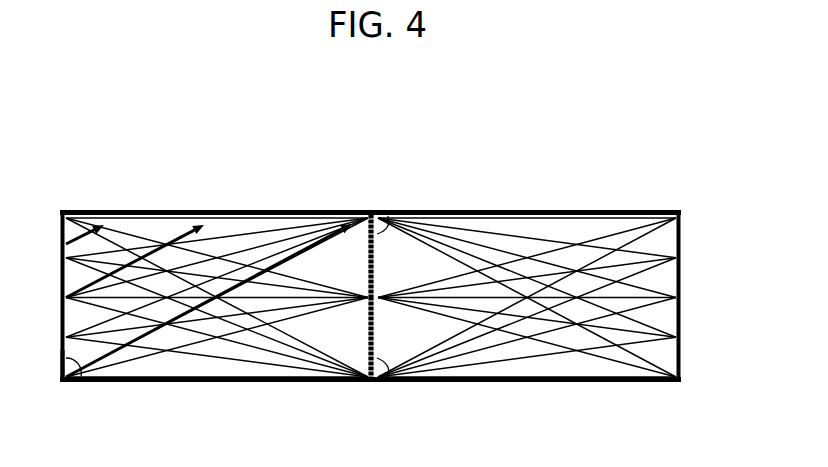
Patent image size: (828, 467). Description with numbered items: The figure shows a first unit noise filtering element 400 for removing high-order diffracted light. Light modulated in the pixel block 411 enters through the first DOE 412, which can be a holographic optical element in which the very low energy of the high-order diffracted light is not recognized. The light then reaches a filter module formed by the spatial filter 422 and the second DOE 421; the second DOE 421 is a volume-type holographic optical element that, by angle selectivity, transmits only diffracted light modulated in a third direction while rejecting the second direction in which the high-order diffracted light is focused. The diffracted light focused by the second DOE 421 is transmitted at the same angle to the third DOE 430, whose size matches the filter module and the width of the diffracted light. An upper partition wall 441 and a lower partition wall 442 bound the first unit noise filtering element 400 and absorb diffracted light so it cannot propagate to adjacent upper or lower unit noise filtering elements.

The first unit noise filtering element 400 is at (382, 124).
The pixel block 411 is at (62, 222).
The first DOE 412 is at (66, 384).
The second DOE 421 is at (384, 213).
The spatial filter 422 is at (386, 383).
The third DOE 430 is at (683, 222).
The upper partition wall 441 is at (514, 211).
The lower partition wall 442 is at (514, 383).